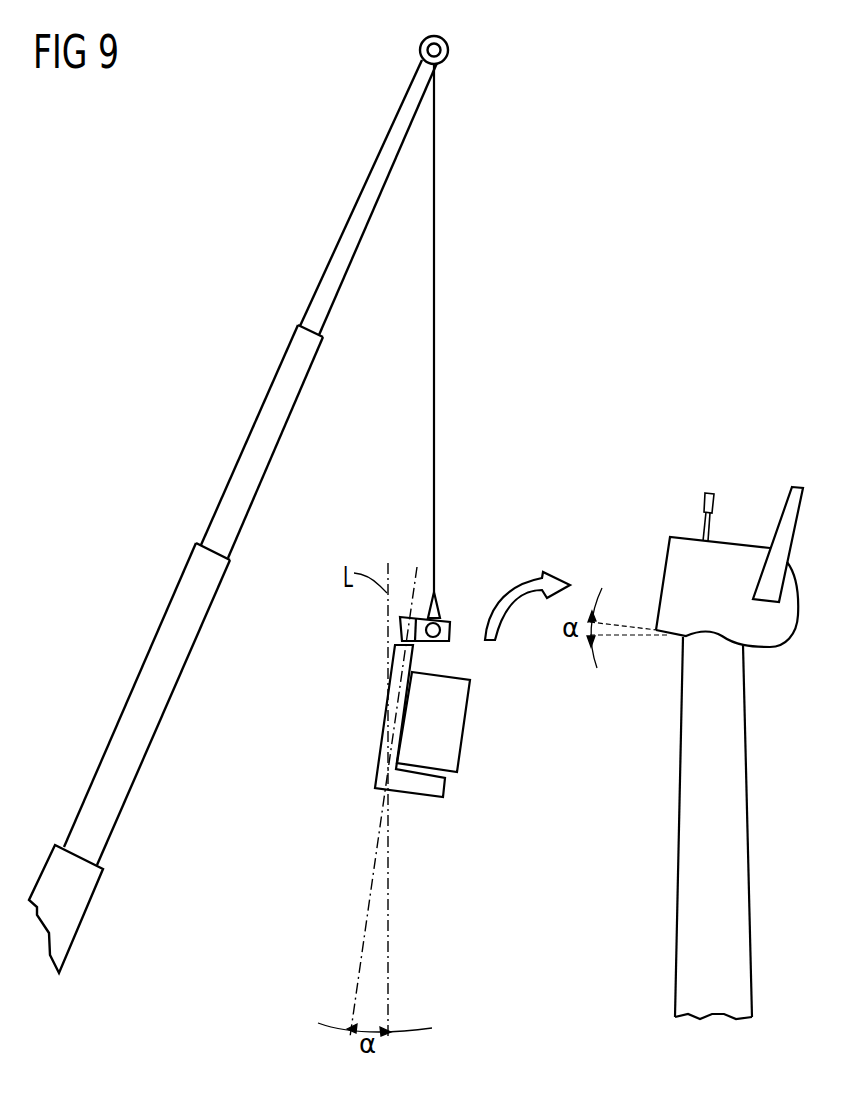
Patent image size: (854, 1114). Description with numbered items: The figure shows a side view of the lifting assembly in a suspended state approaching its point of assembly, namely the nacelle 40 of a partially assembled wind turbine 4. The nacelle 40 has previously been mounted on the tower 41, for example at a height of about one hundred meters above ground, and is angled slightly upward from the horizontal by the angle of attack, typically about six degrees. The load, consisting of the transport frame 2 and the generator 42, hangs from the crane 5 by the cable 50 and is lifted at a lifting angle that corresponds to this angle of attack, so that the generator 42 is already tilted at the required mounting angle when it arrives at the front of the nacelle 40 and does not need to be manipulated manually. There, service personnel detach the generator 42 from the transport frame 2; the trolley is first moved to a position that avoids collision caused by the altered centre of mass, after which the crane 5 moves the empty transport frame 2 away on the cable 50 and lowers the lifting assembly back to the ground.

The transport frame 2 is at (423, 789).
The wind turbine 4 is at (721, 707).
The crane 5 is at (237, 507).
The nacelle 40 is at (732, 555).
The tower 41 is at (697, 813).
The generator 42 is at (453, 728).
The hoisting cable 50 is at (437, 409).